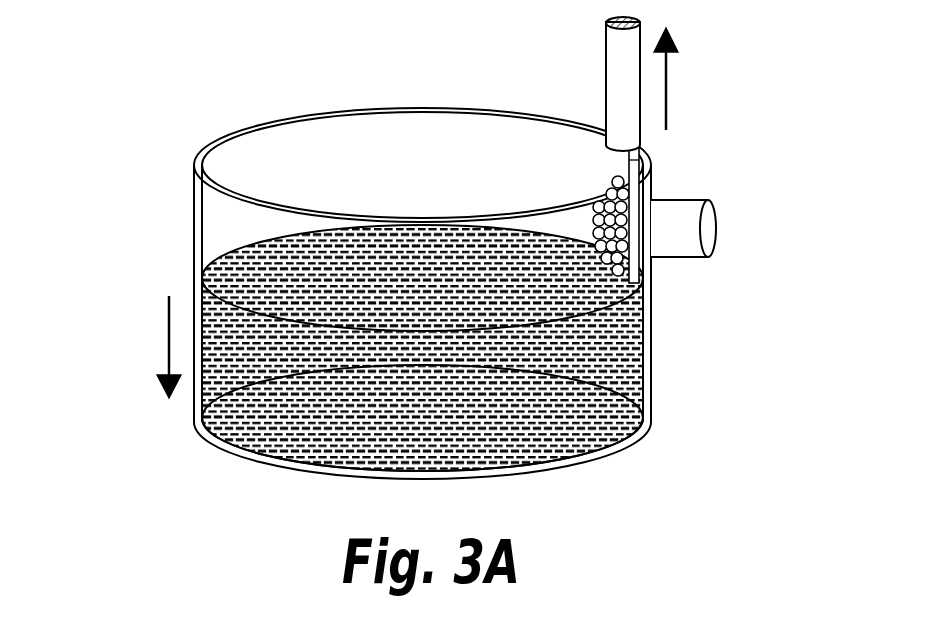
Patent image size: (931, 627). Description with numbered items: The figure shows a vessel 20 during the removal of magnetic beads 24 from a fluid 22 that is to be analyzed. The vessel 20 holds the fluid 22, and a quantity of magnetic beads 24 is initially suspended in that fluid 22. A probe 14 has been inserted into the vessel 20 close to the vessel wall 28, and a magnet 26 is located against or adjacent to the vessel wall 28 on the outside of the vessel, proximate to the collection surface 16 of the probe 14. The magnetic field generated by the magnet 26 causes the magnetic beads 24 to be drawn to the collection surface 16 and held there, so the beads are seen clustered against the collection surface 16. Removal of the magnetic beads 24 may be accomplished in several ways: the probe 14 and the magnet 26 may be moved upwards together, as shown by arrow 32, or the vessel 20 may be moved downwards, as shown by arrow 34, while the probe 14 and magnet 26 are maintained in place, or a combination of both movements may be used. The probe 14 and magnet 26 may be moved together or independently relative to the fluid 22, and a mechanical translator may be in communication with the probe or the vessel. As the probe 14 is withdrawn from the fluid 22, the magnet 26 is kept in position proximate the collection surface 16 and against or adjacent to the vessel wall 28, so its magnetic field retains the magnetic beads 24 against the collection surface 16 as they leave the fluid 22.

The probe 14 is at (612, 52).
The collection surface 16 is at (643, 192).
The vessel 20 is at (248, 127).
The fluid 22 is at (612, 345).
The magnetic beads 24 is at (578, 216).
The magnet 26 is at (687, 237).
The vessel wall 28 is at (674, 412).
The arrow 32 is at (667, 80).
The arrow 34 is at (167, 342).